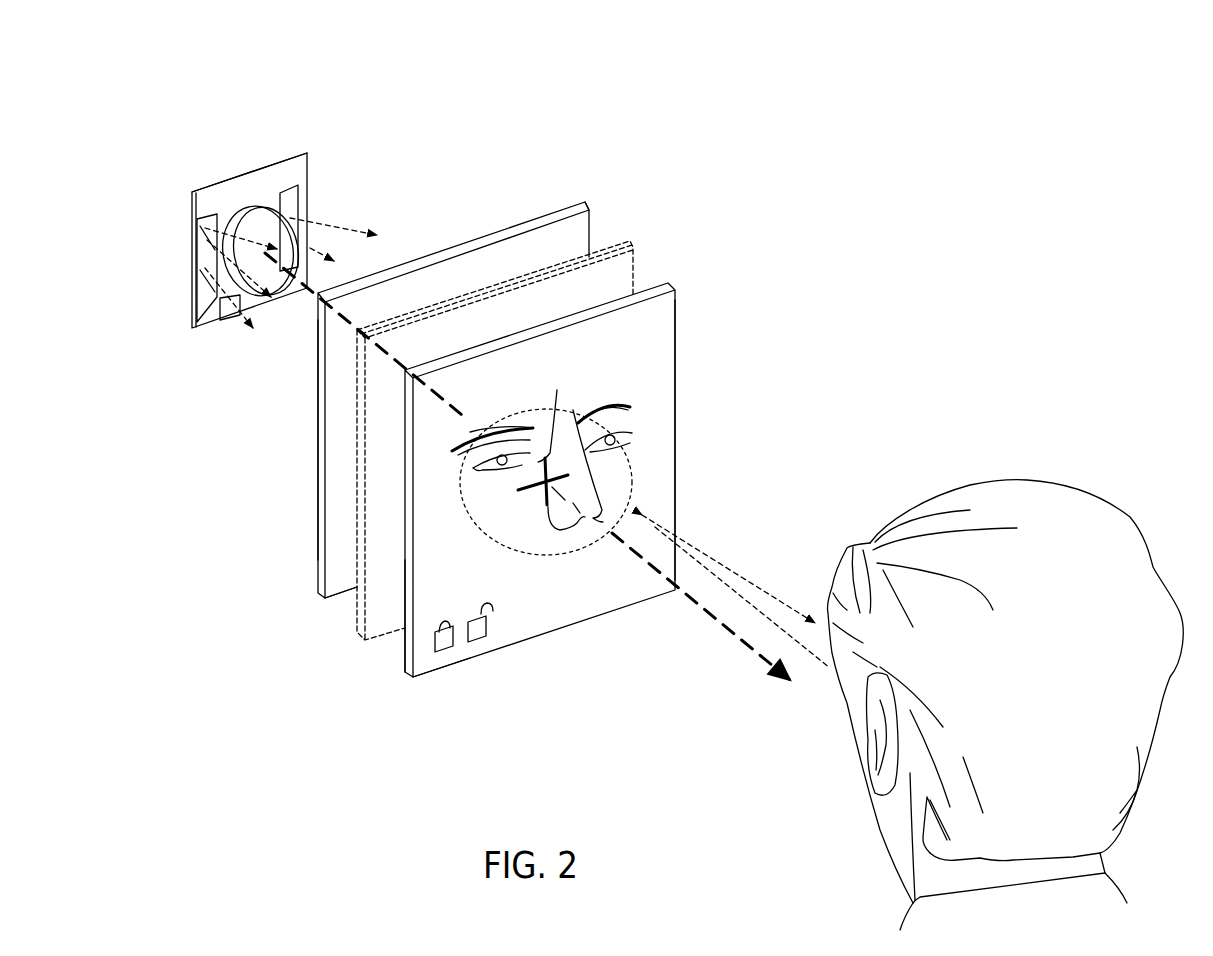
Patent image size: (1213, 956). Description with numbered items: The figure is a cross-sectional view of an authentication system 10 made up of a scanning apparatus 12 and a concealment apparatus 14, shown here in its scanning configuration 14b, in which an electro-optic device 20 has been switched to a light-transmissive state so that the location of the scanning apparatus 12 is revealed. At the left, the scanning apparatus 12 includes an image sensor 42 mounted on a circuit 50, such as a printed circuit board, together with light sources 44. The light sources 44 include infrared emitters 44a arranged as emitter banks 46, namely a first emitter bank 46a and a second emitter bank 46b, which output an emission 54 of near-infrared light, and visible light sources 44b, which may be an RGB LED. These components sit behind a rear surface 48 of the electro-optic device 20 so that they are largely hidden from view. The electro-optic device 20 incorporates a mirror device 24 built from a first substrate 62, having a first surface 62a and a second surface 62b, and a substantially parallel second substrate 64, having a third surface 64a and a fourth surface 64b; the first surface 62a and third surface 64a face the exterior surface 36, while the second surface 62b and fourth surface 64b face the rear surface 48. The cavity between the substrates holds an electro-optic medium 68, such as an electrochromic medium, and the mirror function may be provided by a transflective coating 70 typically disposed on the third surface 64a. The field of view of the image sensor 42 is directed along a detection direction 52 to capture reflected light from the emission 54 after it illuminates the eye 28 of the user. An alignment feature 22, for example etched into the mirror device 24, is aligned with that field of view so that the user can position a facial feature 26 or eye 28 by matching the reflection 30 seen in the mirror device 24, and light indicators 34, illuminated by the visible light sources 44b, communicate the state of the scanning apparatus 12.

The authentication system 10 is at (540, 76).
The scanning apparatus 12 is at (205, 145).
The concealment apparatus 14 is at (855, 219).
The scanning configuration 14b is at (785, 242).
The electro-optic device 20 is at (706, 526).
The alignment feature 22 is at (557, 395).
The mirror device 24 is at (330, 638).
The facial feature 26 is at (658, 227).
The eye 28 is at (817, 767).
The reflection 30 is at (650, 453).
The light indicators 34 is at (477, 637).
The exterior surface 36 is at (658, 403).
The image sensor 42 is at (262, 225).
The light sources 44 is at (148, 314).
The infrared emitters 44a is at (203, 287).
The visible light sources 44b is at (225, 320).
The infrared emitter banks 46 is at (239, 232).
The first emitter bank 46a is at (205, 242).
The second emitter bank 46b is at (293, 197).
The rear surface 48 is at (452, 245).
The circuit 50 is at (250, 177).
The detection direction 52 is at (715, 618).
The emission 54 is at (312, 243).
The first substrate 62 is at (643, 297).
The first surface 62a is at (422, 675).
The second surface 62b is at (403, 643).
The second substrate 64 is at (450, 389).
The third surface 64a is at (337, 585).
The fourth surface 64b is at (318, 560).
The electro-optic medium 68 is at (633, 263).
The transflective coating 70 is at (553, 212).